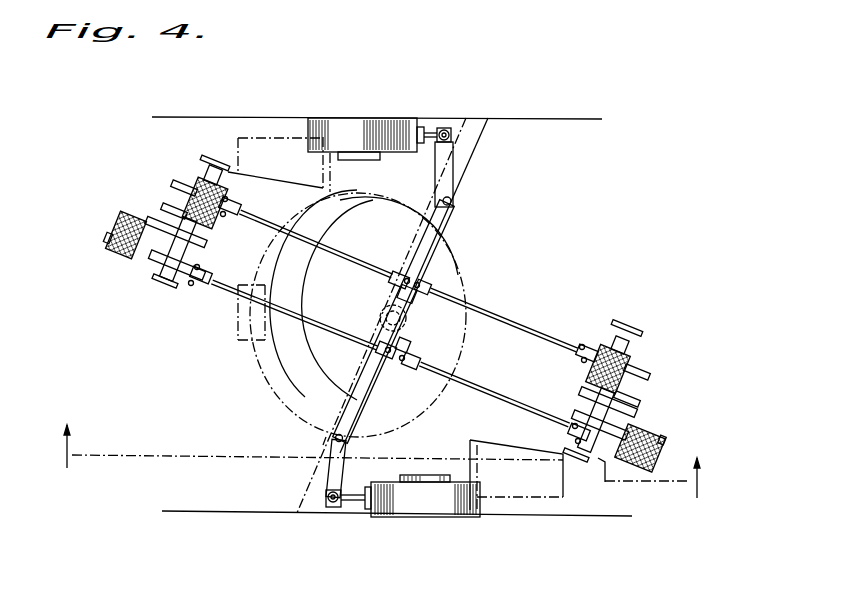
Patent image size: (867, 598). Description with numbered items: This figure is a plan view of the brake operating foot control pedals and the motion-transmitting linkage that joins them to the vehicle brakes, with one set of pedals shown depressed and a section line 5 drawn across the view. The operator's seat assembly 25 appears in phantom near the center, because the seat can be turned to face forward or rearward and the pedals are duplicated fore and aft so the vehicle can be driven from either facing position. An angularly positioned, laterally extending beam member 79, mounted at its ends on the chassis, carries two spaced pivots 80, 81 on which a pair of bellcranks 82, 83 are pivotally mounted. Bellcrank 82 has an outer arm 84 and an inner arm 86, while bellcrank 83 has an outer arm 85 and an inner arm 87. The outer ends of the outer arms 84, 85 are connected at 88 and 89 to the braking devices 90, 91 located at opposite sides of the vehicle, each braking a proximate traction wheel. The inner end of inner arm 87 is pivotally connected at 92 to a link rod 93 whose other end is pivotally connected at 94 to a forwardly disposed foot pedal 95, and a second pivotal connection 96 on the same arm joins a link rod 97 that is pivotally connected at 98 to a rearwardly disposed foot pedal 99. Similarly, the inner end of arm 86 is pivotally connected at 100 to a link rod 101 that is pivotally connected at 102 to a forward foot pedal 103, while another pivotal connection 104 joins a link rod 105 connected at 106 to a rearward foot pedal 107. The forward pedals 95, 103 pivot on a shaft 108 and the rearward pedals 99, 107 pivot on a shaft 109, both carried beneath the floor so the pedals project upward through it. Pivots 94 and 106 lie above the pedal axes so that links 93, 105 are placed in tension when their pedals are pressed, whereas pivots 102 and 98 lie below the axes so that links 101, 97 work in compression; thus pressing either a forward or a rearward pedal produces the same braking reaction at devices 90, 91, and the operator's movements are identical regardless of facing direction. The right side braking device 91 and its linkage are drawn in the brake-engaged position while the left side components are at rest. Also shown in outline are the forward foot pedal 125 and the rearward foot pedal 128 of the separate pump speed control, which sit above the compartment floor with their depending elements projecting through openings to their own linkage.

The section line 5- 5 is at (375, 463).
The operator's seat assembly 25 is at (278, 378).
The beam member 79 is at (480, 146).
The pivot 80 is at (454, 207).
The pivot 81 is at (336, 437).
The bellcrank 82 is at (471, 187).
The bellcrank 83 is at (325, 442).
The outer arm 84 is at (458, 176).
The outer arm 85 is at (332, 452).
The inner arm 86 is at (450, 232).
The inner arm 87 is at (395, 380).
The connection 88 is at (446, 130).
The connection 89 is at (333, 507).
The braking device 90 is at (364, 123).
The braking device 91 is at (455, 505).
The pivotal connection 92 is at (408, 348).
The link rod 93 is at (492, 392).
The pivotal connection 94 is at (572, 420).
The forwardly disposed foot pedal 95 is at (670, 426).
The pivotal connection 96 is at (395, 338).
The link rod 97 is at (345, 290).
The pivotal connection 98 is at (196, 290).
The rearwardly disposed foot pedal 99 is at (120, 262).
The pivotal connection 100 is at (428, 286).
The link rod 101 is at (520, 314).
The pivotal connection 102 is at (590, 343).
The forwardly disposed foot pedal 103 is at (637, 356).
The pivotal connection 104 is at (402, 272).
The link rod 105 is at (260, 220).
The pivotal connection 106 is at (236, 206).
The rearwardly disposed foot pedal 107 is at (196, 186).
The shaft 108 is at (638, 324).
The shaft 109 is at (165, 292).
The foot pedal 125 is at (520, 485).
The foot pedal 128 is at (313, 140).